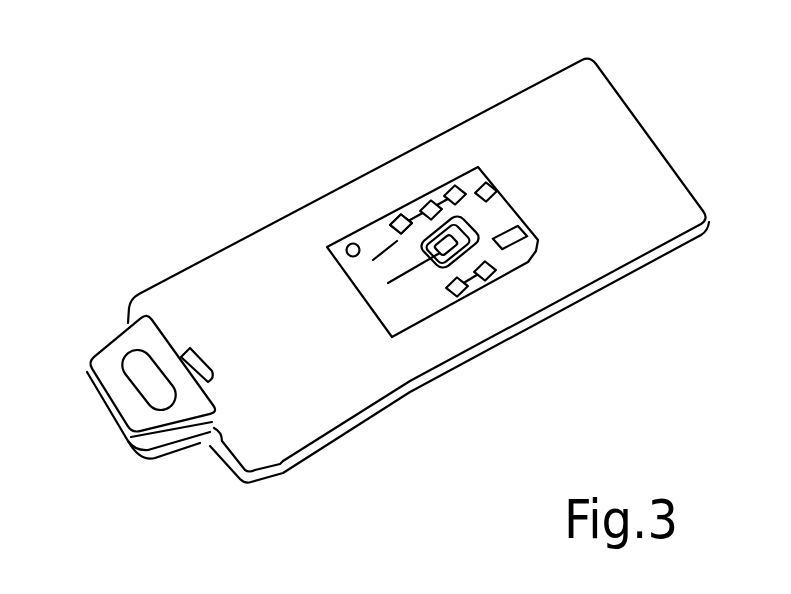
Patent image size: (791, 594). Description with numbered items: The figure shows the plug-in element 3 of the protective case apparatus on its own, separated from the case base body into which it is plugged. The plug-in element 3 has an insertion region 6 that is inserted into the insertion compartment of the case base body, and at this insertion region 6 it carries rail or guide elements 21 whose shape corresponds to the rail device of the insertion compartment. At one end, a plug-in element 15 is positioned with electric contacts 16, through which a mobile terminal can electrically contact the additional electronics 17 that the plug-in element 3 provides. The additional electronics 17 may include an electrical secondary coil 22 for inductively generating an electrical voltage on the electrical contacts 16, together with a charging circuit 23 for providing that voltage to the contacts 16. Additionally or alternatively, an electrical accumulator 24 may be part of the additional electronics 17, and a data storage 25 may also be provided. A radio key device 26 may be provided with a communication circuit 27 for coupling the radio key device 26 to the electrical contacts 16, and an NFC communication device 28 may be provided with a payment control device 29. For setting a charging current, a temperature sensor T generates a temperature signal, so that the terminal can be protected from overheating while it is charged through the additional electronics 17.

The plug-in element 3 is at (108, 325).
The insertion region 6 is at (243, 272).
The plug-in element 15 is at (117, 397).
The electric contacts 16 is at (197, 365).
The additional electronics 17 is at (420, 305).
The guide elements 21 is at (520, 93).
The electrical secondary coil 22 is at (390, 226).
The charging circuit 23 is at (518, 226).
The electrical accumulator 24 is at (498, 188).
The data storage 25 is at (457, 184).
The radio key device 26 is at (428, 198).
The communication circuit 27 is at (398, 214).
The NFC communication device 28 is at (497, 271).
The payment control device 29 is at (467, 288).
The temperature sensor T is at (347, 245).